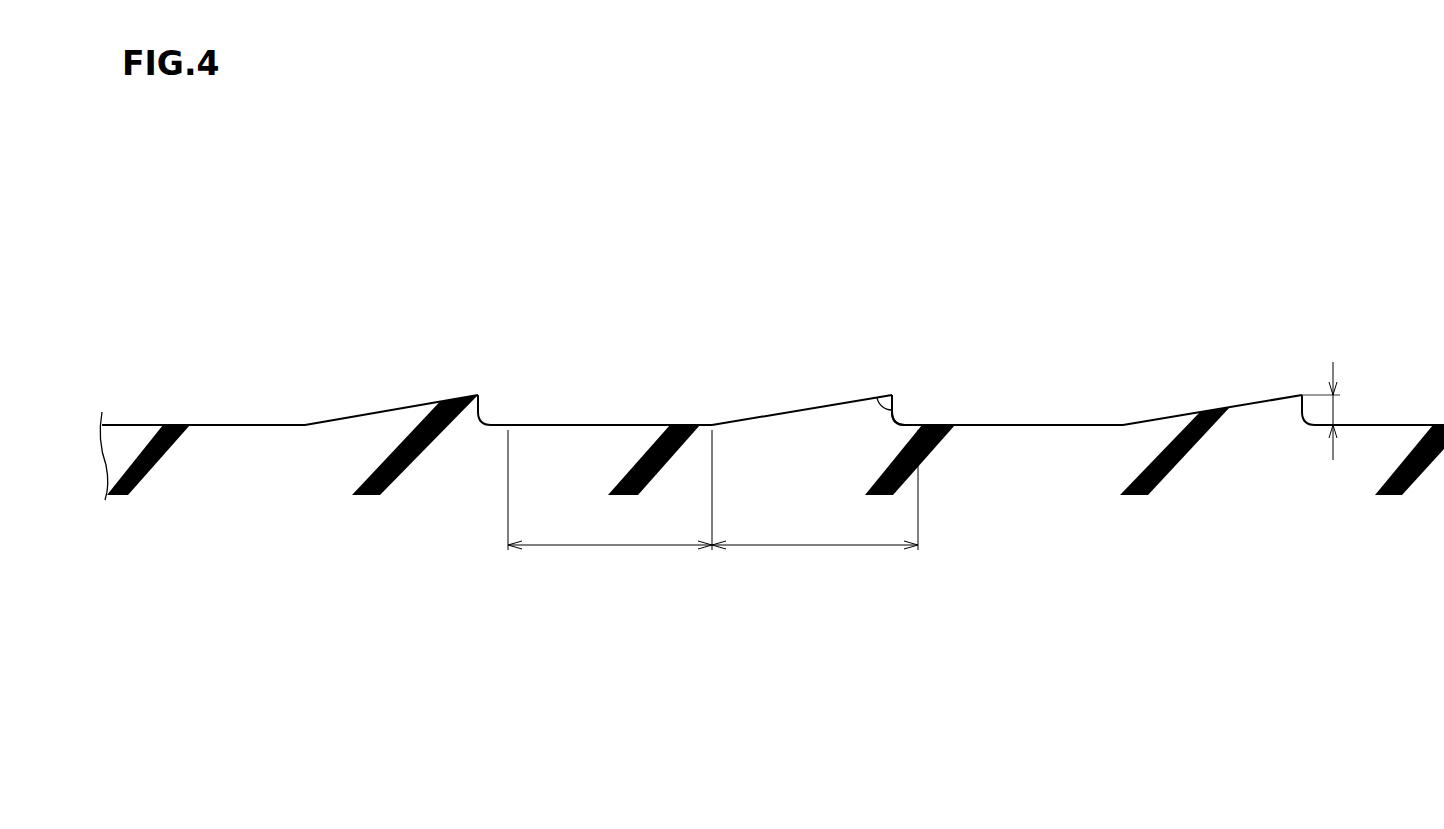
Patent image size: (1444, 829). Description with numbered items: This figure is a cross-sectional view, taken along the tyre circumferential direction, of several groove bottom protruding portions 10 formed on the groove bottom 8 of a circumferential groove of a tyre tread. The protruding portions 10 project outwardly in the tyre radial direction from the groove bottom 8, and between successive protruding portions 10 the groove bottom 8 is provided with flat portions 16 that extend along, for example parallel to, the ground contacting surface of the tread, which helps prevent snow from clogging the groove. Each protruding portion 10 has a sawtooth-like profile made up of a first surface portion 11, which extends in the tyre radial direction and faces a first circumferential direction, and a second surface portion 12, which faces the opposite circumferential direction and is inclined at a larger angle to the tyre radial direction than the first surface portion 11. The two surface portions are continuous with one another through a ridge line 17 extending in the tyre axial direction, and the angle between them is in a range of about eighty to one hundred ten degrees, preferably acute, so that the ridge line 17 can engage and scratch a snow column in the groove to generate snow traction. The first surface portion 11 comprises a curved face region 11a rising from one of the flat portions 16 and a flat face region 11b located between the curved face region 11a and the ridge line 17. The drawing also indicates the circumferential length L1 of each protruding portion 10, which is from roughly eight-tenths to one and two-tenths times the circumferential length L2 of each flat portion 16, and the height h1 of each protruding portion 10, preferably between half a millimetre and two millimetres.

The groove bottom 8 is at (139, 423).
The flat portions 16 is at (244, 423).
The second surface portion 12 is at (372, 410).
The groove bottom protruding portions 10 is at (418, 404).
The ridge line 17 is at (487, 395).
The first surface portion 11 is at (491, 416).
The flat face region 11b is at (895, 402).
The curved face region 11a is at (905, 422).
The length of groove bottom protruding portion L1 is at (815, 505).
The length of flat portion L2 is at (610, 505).
The height of groove bottom protruding portion h1 is at (1335, 410).